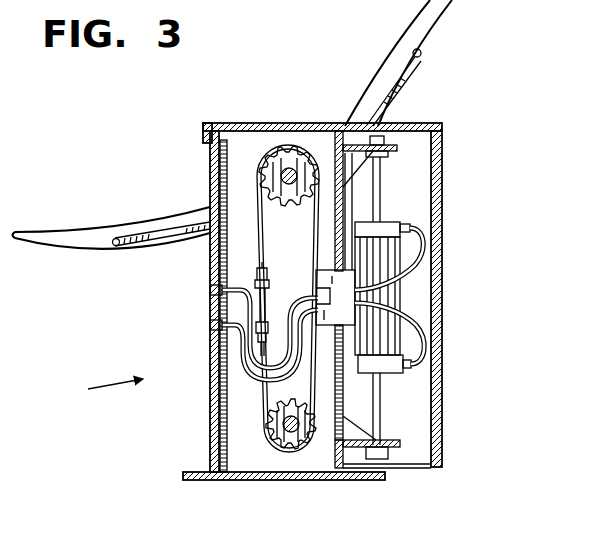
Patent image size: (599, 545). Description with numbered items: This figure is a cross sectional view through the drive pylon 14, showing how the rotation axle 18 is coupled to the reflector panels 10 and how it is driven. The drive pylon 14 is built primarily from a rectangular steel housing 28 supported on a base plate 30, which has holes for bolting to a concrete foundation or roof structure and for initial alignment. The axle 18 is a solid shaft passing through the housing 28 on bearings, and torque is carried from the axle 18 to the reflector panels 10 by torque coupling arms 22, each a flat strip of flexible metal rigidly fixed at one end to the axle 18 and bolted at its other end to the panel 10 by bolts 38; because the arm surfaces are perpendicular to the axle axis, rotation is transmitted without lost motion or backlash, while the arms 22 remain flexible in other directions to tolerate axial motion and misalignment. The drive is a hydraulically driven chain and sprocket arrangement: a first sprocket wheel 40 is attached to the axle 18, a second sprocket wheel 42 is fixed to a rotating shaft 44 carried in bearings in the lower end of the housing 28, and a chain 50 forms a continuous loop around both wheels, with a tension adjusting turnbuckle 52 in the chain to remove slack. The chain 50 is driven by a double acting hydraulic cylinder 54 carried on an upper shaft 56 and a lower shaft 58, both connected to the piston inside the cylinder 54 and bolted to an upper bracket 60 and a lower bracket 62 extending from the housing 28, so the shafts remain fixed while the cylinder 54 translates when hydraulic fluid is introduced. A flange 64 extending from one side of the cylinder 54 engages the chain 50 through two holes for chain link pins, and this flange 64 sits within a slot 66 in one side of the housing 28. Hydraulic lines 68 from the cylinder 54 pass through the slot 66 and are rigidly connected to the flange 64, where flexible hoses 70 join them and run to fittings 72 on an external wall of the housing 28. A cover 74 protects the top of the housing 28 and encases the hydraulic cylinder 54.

The reflector panel 10 is at (447, 24).
The drive pylon 14 is at (100, 390).
The rotation axle 18 is at (281, 170).
The torque coupling arm 22 is at (153, 237).
The housing 28 is at (221, 408).
The base plate 30 is at (278, 481).
The bolt 38 is at (116, 246).
The first sprocket wheel 40 is at (315, 193).
The second sprocket wheel 42 is at (270, 442).
The rotating shaft 44 is at (310, 408).
The chain 50 is at (258, 227).
The tension adjusting turnbuckle 52 is at (268, 284).
The double acting hydraulic cylinder 54 is at (405, 289).
The upper shaft 56 is at (382, 196).
The lower shaft 58 is at (382, 392).
The upper bracket 60 is at (389, 153).
The lower bracket 62 is at (390, 451).
The flange 64 is at (316, 281).
The slot 66 is at (341, 214).
The hydraulic line 68 is at (425, 250).
The flexible hose 70 is at (226, 290).
The fitting 72 is at (209, 290).
The cover 74 is at (441, 195).